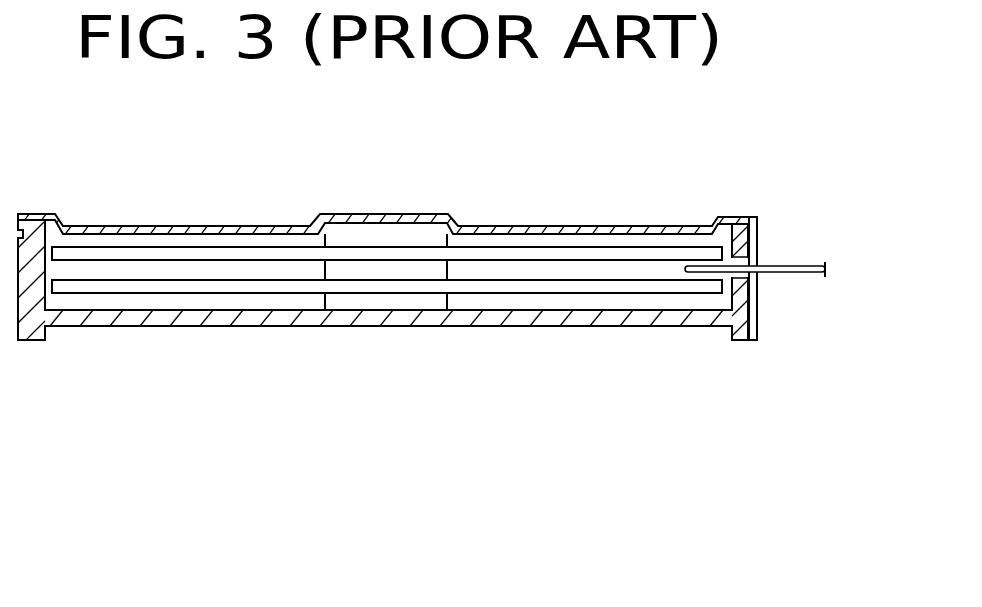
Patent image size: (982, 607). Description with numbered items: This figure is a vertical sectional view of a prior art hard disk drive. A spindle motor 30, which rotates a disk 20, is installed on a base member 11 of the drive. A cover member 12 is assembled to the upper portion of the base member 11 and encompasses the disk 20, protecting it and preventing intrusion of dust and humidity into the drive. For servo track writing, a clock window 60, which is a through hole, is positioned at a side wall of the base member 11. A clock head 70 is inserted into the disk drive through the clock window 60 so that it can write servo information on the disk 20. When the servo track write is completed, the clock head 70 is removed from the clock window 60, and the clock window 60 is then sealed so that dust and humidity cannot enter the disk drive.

The base member 11 is at (533, 323).
The cover member 12 is at (541, 226).
The disk 20 is at (577, 292).
The spindle motor 30 is at (377, 305).
The clock window 60 is at (757, 283).
The clock head 70 is at (805, 264).